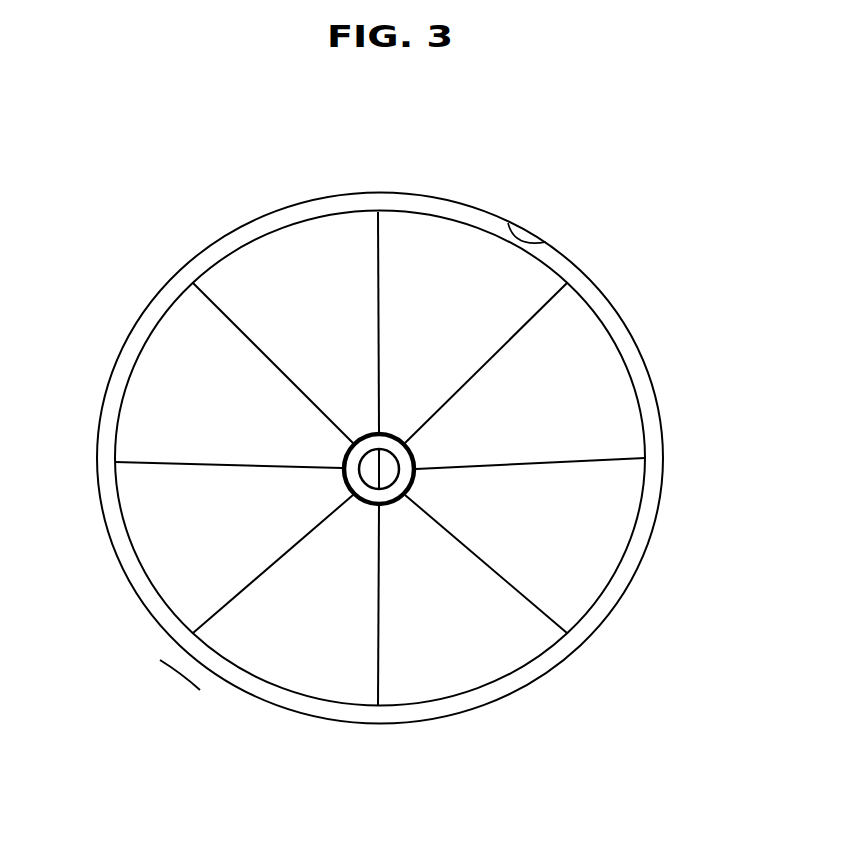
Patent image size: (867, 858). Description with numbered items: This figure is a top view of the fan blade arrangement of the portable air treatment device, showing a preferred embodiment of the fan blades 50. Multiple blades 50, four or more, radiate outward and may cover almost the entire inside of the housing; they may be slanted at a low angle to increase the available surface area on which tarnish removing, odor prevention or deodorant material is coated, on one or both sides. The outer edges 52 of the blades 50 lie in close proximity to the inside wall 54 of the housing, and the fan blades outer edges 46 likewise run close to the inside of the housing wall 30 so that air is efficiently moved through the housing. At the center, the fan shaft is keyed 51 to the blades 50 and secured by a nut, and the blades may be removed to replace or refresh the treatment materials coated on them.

The fan blades 50 is at (148, 205).
The outer edges 52 is at (618, 350).
The fan blades outer edges 46 is at (492, 687).
The housing wall 30 is at (178, 648).
The inside wall 54 is at (543, 242).
The key 51 is at (322, 482).